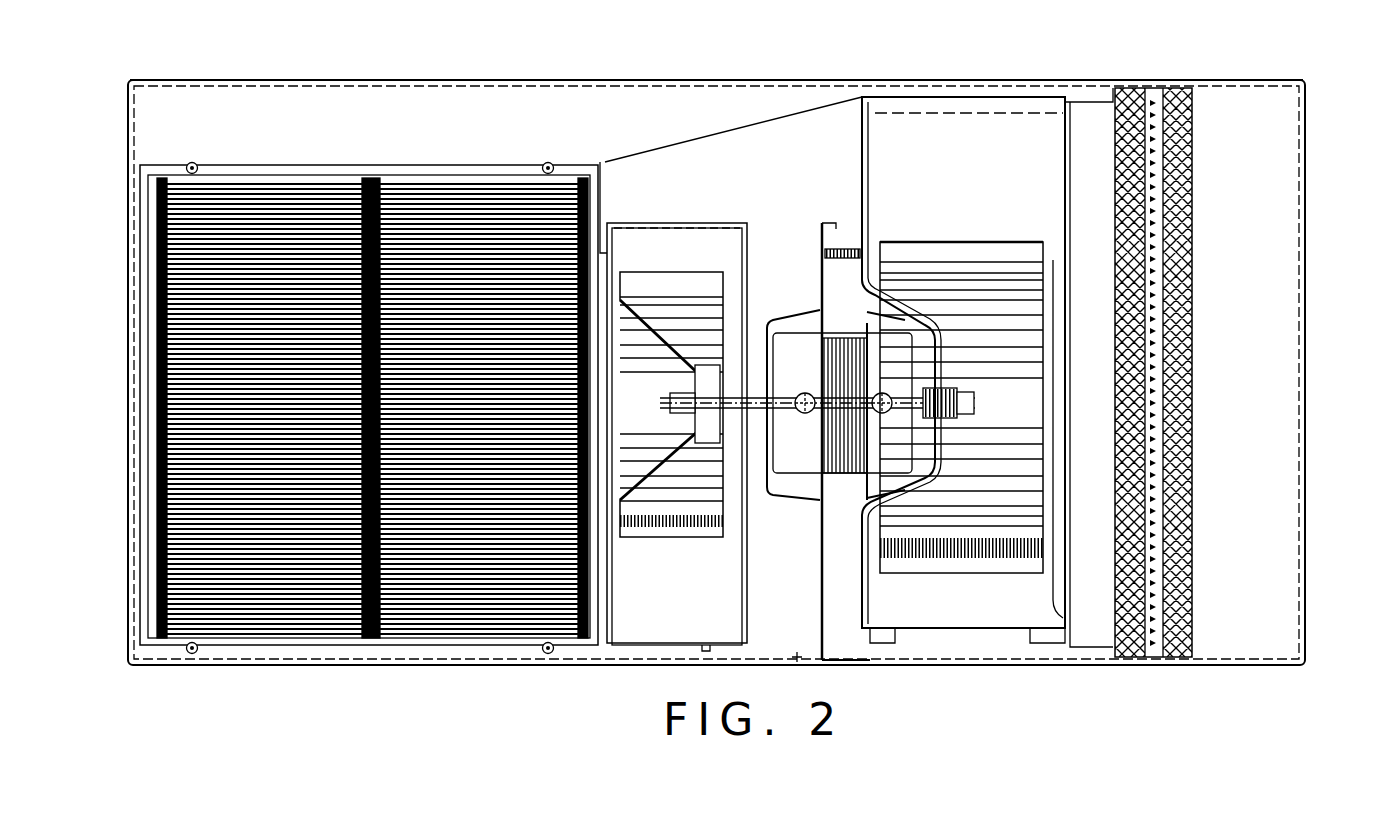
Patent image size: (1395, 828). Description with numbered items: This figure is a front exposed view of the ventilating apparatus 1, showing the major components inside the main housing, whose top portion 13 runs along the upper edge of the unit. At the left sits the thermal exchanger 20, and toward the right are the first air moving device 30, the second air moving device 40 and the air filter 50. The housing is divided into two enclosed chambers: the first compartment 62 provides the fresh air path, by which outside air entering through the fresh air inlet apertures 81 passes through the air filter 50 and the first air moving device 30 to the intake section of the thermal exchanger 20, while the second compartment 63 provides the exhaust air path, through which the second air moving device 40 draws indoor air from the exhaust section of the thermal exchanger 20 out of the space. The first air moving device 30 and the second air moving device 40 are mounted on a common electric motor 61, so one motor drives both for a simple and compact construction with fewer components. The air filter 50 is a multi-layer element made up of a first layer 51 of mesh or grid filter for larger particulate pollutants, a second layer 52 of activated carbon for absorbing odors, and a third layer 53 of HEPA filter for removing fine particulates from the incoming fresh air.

The ventilating apparatus 1 is at (1332, 74).
The top portion 13 is at (708, 82).
The fresh air inlet apertures 81 is at (1313, 317).
The thermal exchanger 20 is at (185, 437).
The first air moving device 30 is at (990, 560).
The second air moving device 40 is at (637, 540).
The air filter 50 is at (975, 388).
The first layer 51 is at (1180, 660).
The second layer 52 is at (1155, 660).
The third layer 53 is at (1127, 660).
The common electric motor 61 is at (846, 490).
The first compartment 62 is at (972, 197).
The second compartment 63 is at (690, 265).